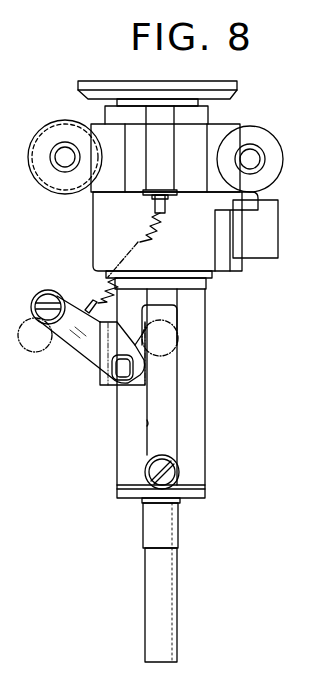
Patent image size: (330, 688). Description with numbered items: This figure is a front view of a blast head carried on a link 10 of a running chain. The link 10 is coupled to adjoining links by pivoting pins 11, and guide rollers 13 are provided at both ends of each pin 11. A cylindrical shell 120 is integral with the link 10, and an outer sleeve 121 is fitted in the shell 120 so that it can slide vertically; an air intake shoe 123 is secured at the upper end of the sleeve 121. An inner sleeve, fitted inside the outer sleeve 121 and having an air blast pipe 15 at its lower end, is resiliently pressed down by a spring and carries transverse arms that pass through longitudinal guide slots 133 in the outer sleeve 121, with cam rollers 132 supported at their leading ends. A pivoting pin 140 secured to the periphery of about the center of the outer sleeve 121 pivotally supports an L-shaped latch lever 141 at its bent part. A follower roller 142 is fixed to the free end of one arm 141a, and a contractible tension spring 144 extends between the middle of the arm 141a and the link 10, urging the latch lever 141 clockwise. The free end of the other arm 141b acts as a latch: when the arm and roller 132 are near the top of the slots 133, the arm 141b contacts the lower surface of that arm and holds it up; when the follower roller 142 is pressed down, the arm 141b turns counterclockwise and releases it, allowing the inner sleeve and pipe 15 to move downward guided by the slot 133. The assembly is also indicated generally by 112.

The air intake shoe 123 is at (103, 84).
The link 10 is at (193, 137).
The link pivoting pin 11 is at (62, 155).
The guide roller 13 is at (38, 148).
The cylindrical shell 120 is at (98, 213).
The tension spring 144 is at (158, 223).
The follower roller 142 is at (45, 290).
The latch lever 141 is at (60, 350).
The arm of latch lever 141a is at (88, 353).
The arm of latch lever 141b is at (150, 361).
The pivoting pin 140 is at (110, 380).
The drive assembly 112 is at (223, 310).
The outer sleeve 121 is at (200, 406).
The guide slot 133 is at (145, 423).
The cam roller 132 is at (178, 468).
The air blast pipe 15 is at (146, 602).